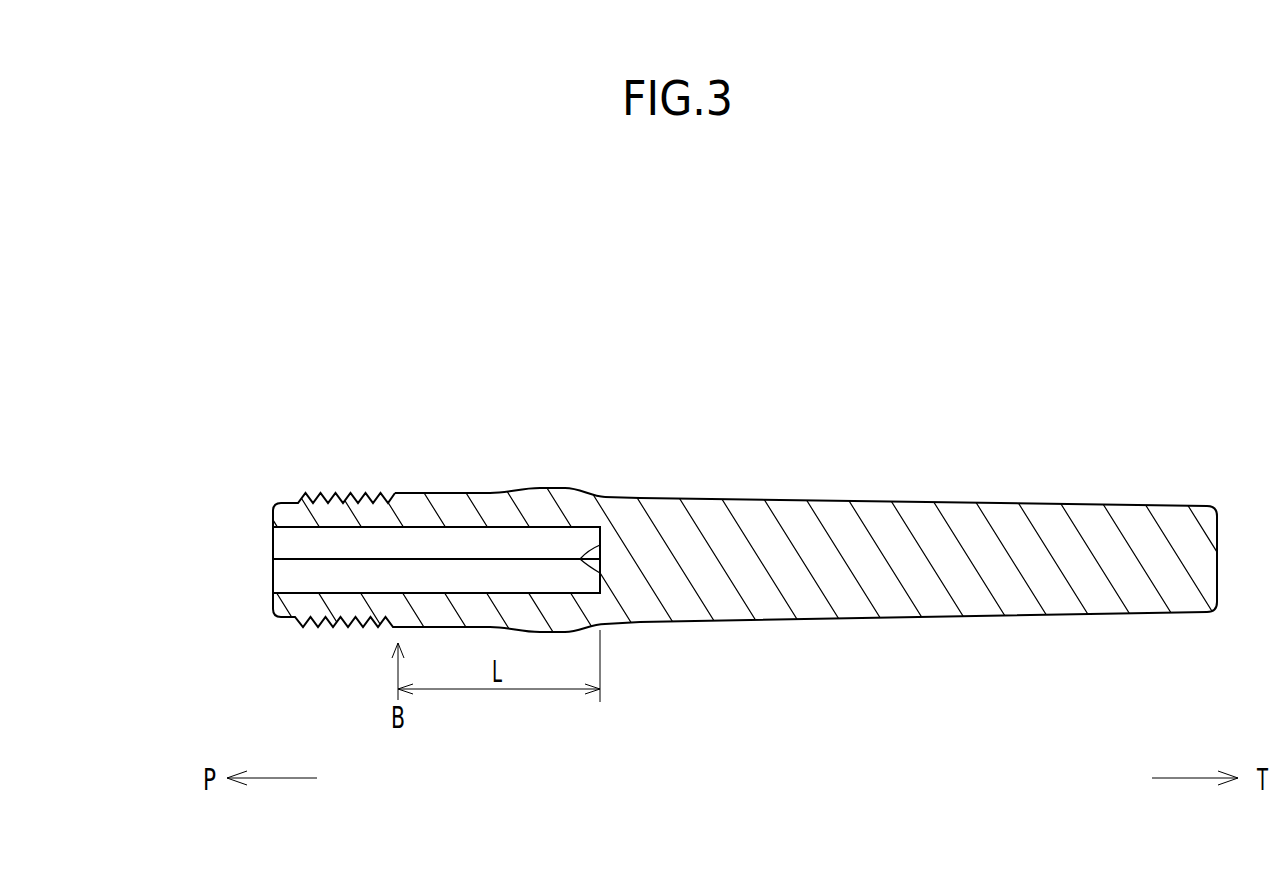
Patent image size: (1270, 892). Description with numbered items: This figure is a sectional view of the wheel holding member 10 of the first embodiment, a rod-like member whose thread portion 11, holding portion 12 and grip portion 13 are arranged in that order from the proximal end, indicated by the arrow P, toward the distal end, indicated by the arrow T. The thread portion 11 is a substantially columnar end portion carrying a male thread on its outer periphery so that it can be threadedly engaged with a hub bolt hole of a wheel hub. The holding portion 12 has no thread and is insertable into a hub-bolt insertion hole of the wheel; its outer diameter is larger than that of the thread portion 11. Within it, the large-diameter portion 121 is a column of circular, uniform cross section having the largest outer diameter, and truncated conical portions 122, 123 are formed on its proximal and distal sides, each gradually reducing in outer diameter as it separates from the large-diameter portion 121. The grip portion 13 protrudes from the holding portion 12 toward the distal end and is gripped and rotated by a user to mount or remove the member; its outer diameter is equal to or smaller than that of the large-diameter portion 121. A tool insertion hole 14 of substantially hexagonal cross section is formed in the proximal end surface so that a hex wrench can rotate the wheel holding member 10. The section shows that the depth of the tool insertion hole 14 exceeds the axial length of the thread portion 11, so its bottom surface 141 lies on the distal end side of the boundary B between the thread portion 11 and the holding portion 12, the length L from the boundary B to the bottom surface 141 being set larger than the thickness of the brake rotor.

The wheel holding member 10 is at (215, 285).
The thread portion 11 is at (395, 407).
The holding portion 12 is at (500, 480).
The large-diameter portion 121 is at (533, 488).
The portion (truncated conical portion on proximal end side) 122 is at (490, 490).
The portion (truncated conical portion on distal end side) 123 is at (574, 444).
The grip portion 13 is at (1215, 407).
The tool insertion hole 14 is at (287, 582).
The bottom surface 141 is at (600, 573).